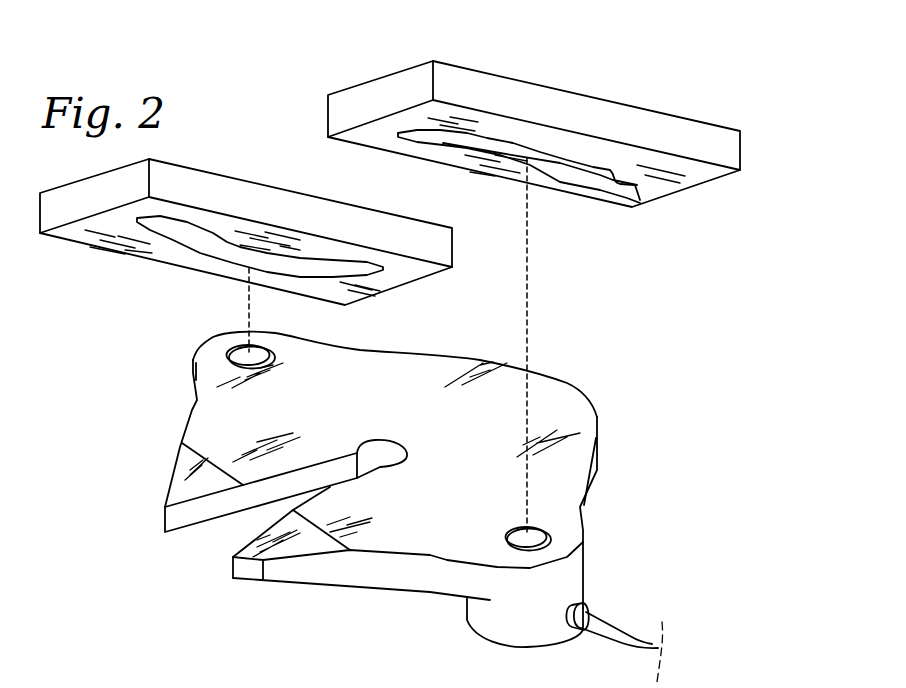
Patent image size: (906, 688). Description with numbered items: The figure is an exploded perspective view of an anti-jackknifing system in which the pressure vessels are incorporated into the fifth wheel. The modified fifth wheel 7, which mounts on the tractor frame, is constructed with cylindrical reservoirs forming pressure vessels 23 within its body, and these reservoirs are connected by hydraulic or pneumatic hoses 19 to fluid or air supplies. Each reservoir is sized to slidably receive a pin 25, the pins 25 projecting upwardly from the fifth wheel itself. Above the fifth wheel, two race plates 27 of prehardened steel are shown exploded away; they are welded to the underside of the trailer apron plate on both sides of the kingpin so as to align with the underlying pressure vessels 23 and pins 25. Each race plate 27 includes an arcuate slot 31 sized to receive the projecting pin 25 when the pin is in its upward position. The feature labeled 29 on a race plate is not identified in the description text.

The fifth wheel 7 is at (566, 412).
The hose 19 is at (633, 637).
The pressure vessel 23 is at (503, 618).
The pin 25 is at (248, 357).
The race plate 27 is at (213, 197).
The pad body 29 is at (713, 144).
The arcuate slot 31 is at (640, 200).